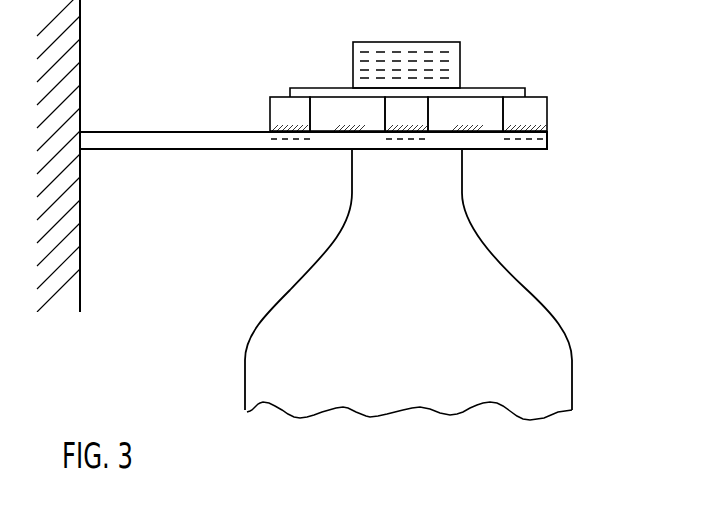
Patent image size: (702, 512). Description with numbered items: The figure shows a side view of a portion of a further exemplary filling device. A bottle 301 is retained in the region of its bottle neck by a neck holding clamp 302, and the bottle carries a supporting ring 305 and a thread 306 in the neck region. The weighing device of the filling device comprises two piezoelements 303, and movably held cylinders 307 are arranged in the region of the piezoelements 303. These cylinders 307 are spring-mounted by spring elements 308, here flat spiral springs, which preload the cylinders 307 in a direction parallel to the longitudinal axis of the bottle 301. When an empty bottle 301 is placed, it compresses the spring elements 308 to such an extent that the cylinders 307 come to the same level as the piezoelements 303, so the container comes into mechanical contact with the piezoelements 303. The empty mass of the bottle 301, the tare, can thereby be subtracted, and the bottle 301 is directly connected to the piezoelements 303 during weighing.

The bottle 301 is at (513, 273).
The neck holding clamp 302 is at (163, 126).
The piezoelements 303 is at (406, 114).
The supporting ring 305 is at (525, 88).
The thread 306 is at (353, 51).
The cylinders 307 is at (408, 114).
The spring elements 308 is at (290, 141).